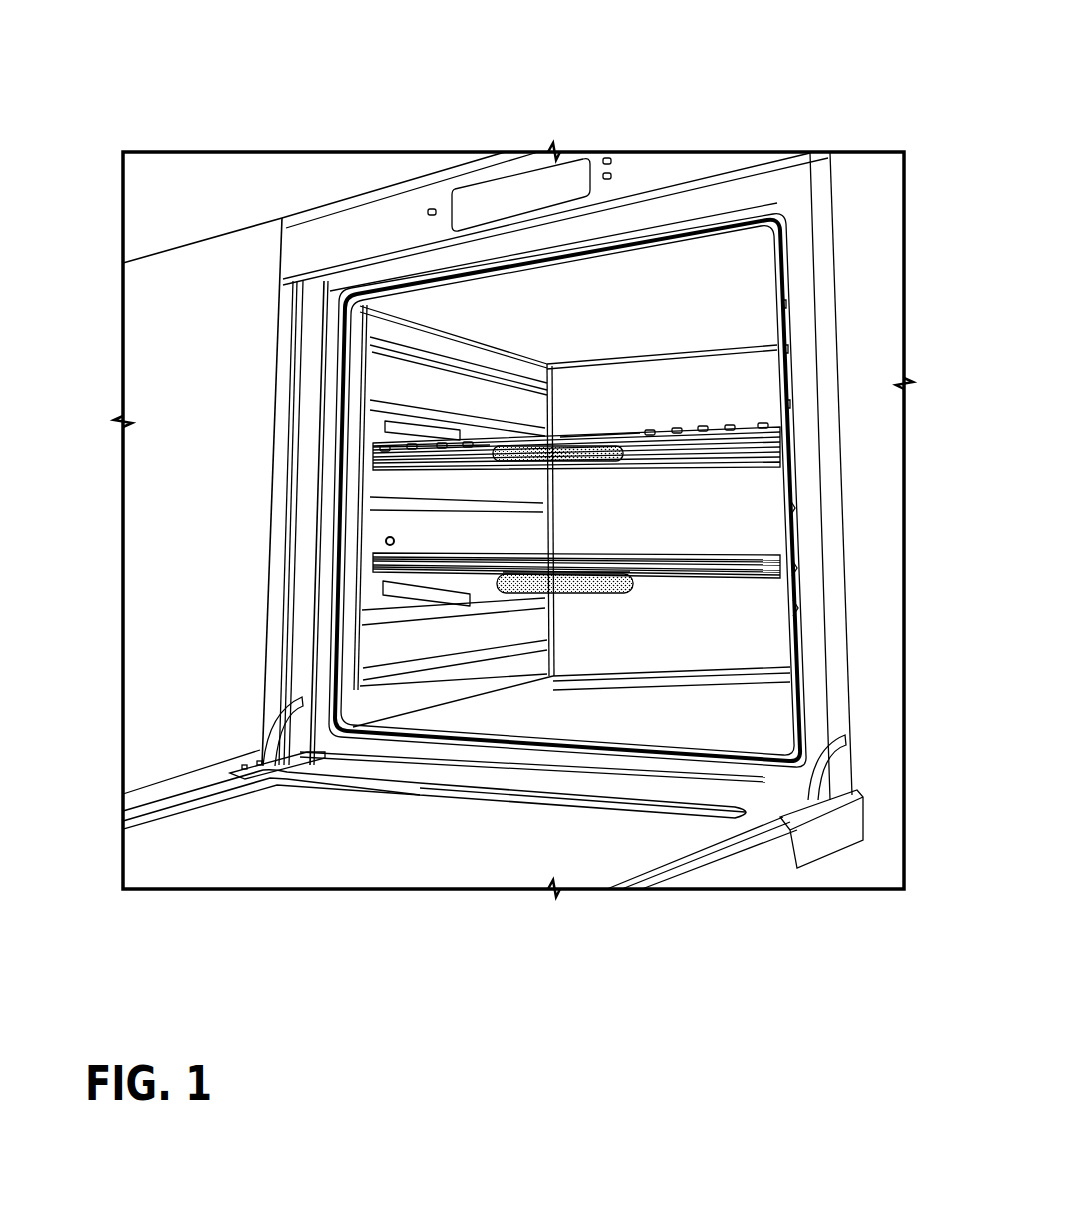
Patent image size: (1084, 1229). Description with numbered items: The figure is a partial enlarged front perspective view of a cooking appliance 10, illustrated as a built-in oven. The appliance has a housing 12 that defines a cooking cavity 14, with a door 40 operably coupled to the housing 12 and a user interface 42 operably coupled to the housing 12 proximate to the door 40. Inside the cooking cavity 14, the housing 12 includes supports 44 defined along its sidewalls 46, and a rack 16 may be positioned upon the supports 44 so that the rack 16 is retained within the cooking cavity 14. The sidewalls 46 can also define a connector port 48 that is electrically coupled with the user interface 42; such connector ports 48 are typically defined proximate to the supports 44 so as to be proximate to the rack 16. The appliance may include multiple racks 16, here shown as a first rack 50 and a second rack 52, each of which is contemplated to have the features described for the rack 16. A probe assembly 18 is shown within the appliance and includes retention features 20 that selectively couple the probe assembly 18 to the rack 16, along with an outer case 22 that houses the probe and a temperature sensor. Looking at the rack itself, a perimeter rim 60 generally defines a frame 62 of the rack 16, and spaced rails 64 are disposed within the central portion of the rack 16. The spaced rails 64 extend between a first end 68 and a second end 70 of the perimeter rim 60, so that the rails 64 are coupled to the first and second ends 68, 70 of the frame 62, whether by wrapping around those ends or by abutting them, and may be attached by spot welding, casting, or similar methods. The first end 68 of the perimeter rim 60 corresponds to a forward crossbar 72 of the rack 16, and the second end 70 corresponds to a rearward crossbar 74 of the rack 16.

The cooking appliance 10 is at (700, 130).
The housing 12 is at (265, 571).
The cooking cavity 14 is at (378, 647).
The rack 16 is at (303, 570).
The probe assembly 18 is at (588, 436).
The retention features 20 is at (617, 433).
The outer case 22 is at (517, 465).
The door 40 is at (240, 852).
The user interface 42 is at (493, 193).
The supports 44 is at (368, 425).
The sidewalls 46 is at (360, 367).
The connector port 48 is at (386, 541).
The first rack 50 is at (370, 453).
The second rack 52 is at (780, 577).
The perimeter rim 60 is at (713, 577).
The frame 62 is at (660, 578).
The spaced rails 64 is at (703, 557).
The first end 68 is at (740, 580).
The second end 70 is at (797, 473).
The forward crossbar 72 is at (556, 664).
The rearward crossbar 74 is at (700, 462).